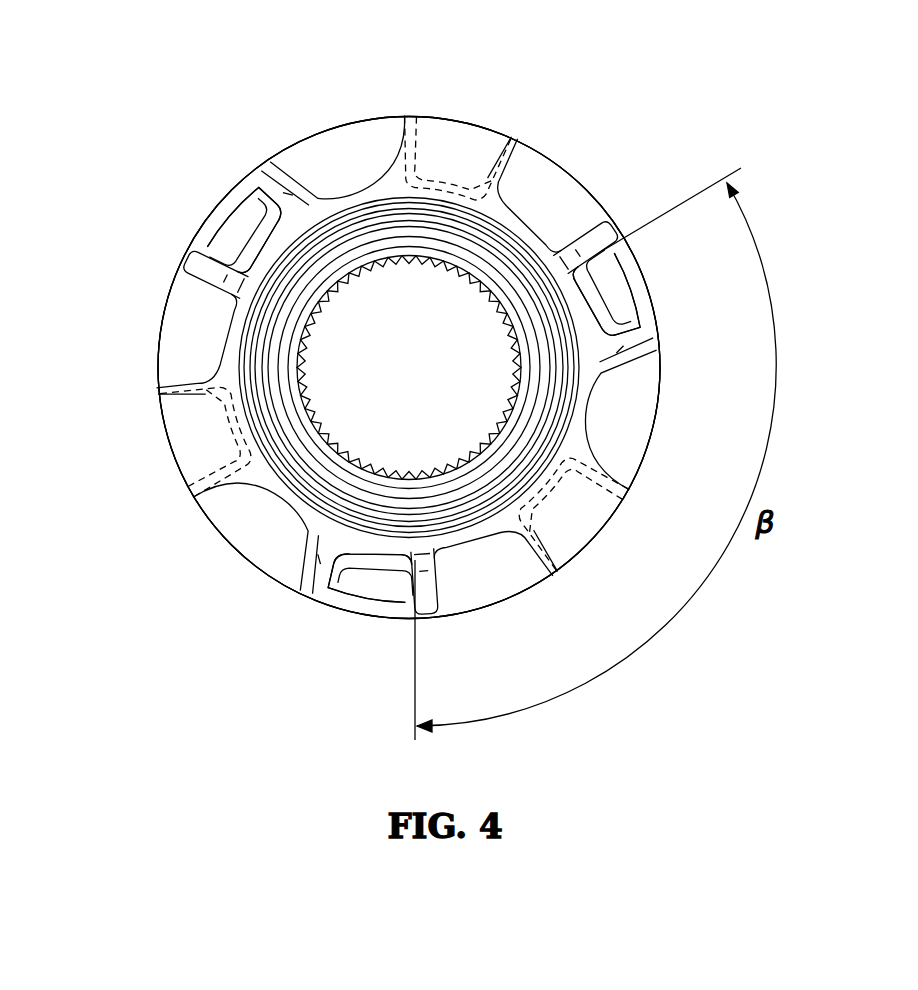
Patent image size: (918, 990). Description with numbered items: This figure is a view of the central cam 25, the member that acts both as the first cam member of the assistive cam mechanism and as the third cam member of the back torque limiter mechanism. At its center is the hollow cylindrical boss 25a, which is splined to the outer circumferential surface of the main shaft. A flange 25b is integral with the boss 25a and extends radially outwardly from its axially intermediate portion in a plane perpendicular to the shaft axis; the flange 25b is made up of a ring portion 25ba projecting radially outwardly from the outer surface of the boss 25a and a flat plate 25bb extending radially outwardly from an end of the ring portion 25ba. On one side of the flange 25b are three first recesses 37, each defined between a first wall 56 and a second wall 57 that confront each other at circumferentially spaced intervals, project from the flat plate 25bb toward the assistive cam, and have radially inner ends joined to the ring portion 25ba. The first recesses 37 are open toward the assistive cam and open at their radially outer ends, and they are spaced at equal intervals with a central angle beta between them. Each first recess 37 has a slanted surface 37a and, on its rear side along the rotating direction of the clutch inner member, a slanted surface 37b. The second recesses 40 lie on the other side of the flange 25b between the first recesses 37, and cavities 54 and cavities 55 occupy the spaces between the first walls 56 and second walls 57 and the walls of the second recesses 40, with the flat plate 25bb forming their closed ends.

The central cam 25 is at (515, 131).
The hollow cylindrical boss 25a is at (556, 398).
The flange 25b is at (151, 351).
The ring portion 25ba is at (253, 462).
The flat plate 25bb is at (597, 179).
The first recess 37 is at (222, 222).
The slanted surface 37a is at (241, 197).
The slanted surface 37b is at (212, 258).
The second recess 40 is at (457, 176).
The cavity 54 is at (384, 188).
The cavity 55 is at (226, 326).
The first wall 56 is at (258, 168).
The second wall 57 is at (192, 268).